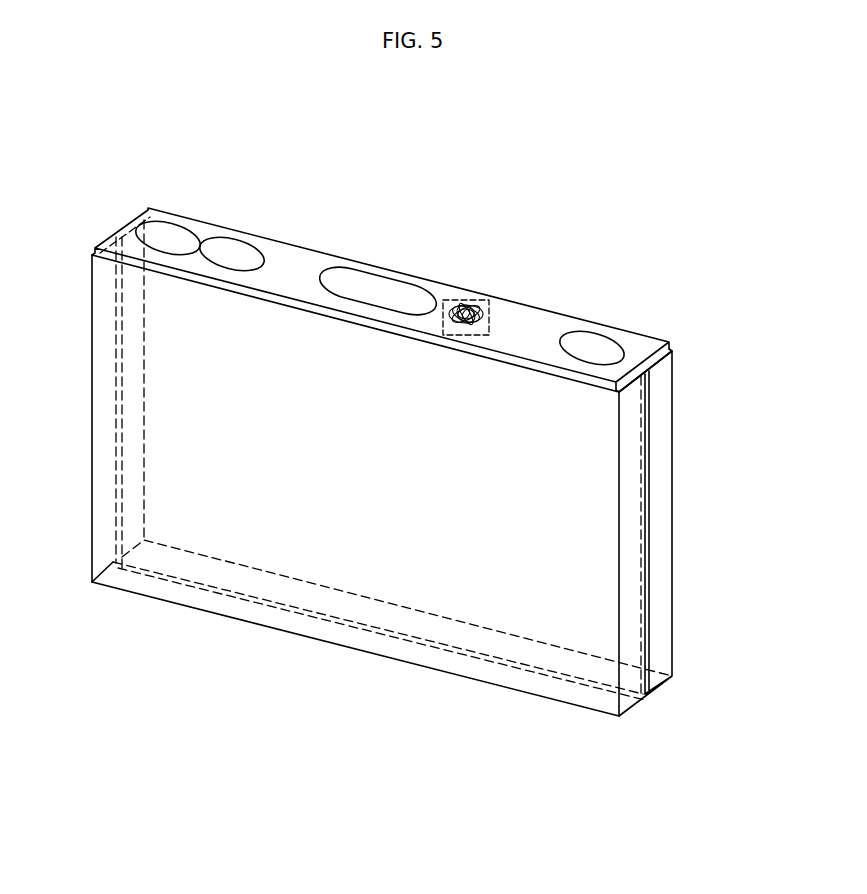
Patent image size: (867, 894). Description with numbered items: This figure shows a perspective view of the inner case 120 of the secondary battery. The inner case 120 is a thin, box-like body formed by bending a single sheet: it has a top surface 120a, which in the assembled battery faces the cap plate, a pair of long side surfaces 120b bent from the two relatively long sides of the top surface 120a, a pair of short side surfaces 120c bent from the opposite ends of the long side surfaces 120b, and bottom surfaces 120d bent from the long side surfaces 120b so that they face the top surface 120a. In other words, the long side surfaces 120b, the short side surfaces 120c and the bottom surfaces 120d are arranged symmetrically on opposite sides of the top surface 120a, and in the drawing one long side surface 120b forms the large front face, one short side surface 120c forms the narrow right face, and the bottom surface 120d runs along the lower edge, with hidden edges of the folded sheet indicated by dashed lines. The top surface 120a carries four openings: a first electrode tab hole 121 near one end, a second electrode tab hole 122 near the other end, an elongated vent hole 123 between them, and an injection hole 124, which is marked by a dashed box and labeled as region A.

The inner case 120 is at (100, 213).
The top surface 120a is at (302, 257).
The long side surfaces 120b is at (340, 522).
The short side surfaces 120c is at (628, 608).
The bottom surfaces 120d is at (418, 647).
The first electrode tab hole 121 is at (175, 222).
The second electrode tab hole 122 is at (595, 332).
The vent hole 123 is at (383, 273).
The injection hole 124 is at (483, 310).
The region A is at (459, 298).